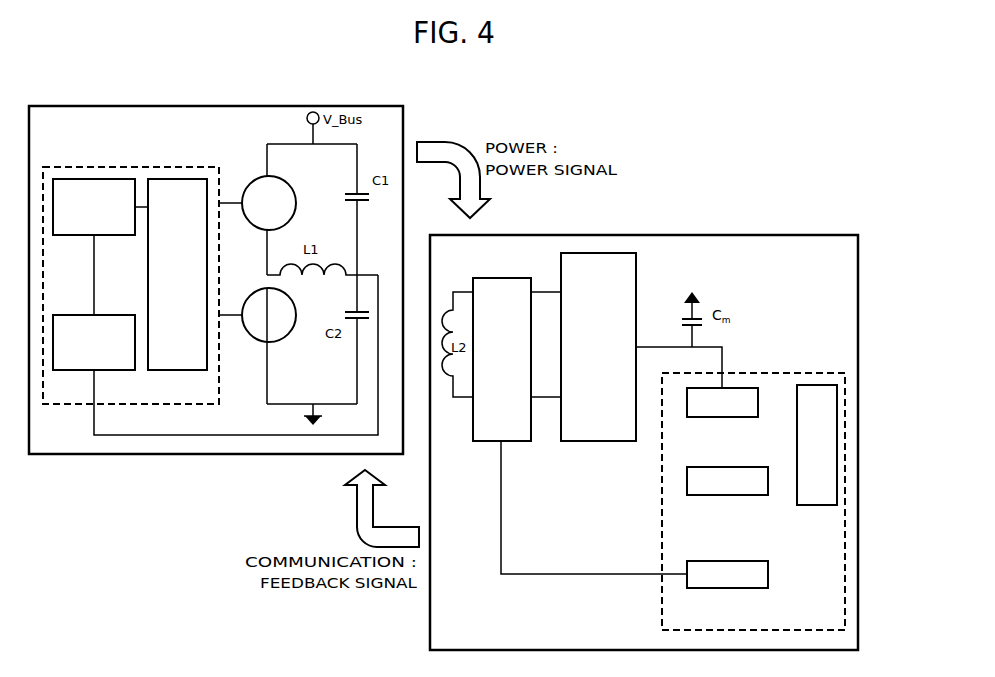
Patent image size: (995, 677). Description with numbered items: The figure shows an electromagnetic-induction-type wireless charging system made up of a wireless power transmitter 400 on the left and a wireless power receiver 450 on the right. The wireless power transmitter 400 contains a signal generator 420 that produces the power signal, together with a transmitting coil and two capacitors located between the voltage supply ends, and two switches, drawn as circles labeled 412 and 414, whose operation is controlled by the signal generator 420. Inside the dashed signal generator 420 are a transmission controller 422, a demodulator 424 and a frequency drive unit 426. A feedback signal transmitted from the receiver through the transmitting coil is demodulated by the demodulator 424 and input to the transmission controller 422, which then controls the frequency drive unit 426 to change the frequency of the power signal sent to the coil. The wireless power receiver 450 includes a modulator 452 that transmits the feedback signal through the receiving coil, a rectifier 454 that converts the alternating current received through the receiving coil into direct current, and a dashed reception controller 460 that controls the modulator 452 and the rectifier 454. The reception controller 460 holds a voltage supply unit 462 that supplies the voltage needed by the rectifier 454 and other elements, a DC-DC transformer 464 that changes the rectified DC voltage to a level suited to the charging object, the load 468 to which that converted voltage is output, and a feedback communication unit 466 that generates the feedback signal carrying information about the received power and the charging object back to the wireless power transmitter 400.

The wireless power transmitter 400 is at (217, 456).
The first switch SW1 412 is at (287, 184).
The second switch SW2 414 is at (284, 340).
The signal generator 420 is at (130, 167).
The transmission controller 422 is at (80, 237).
The demodulator 424 is at (102, 315).
The frequency drive unit 426 is at (178, 372).
The wireless power receiver 450 is at (645, 234).
The modulator 452 is at (503, 277).
The rectifier 454 is at (598, 447).
The reception controller 460 is at (755, 372).
The voltage supply unit 462 is at (720, 418).
The DC-DC transformer 464 is at (727, 497).
The feedback communication unit 466 is at (727, 590).
The load 468 is at (815, 508).